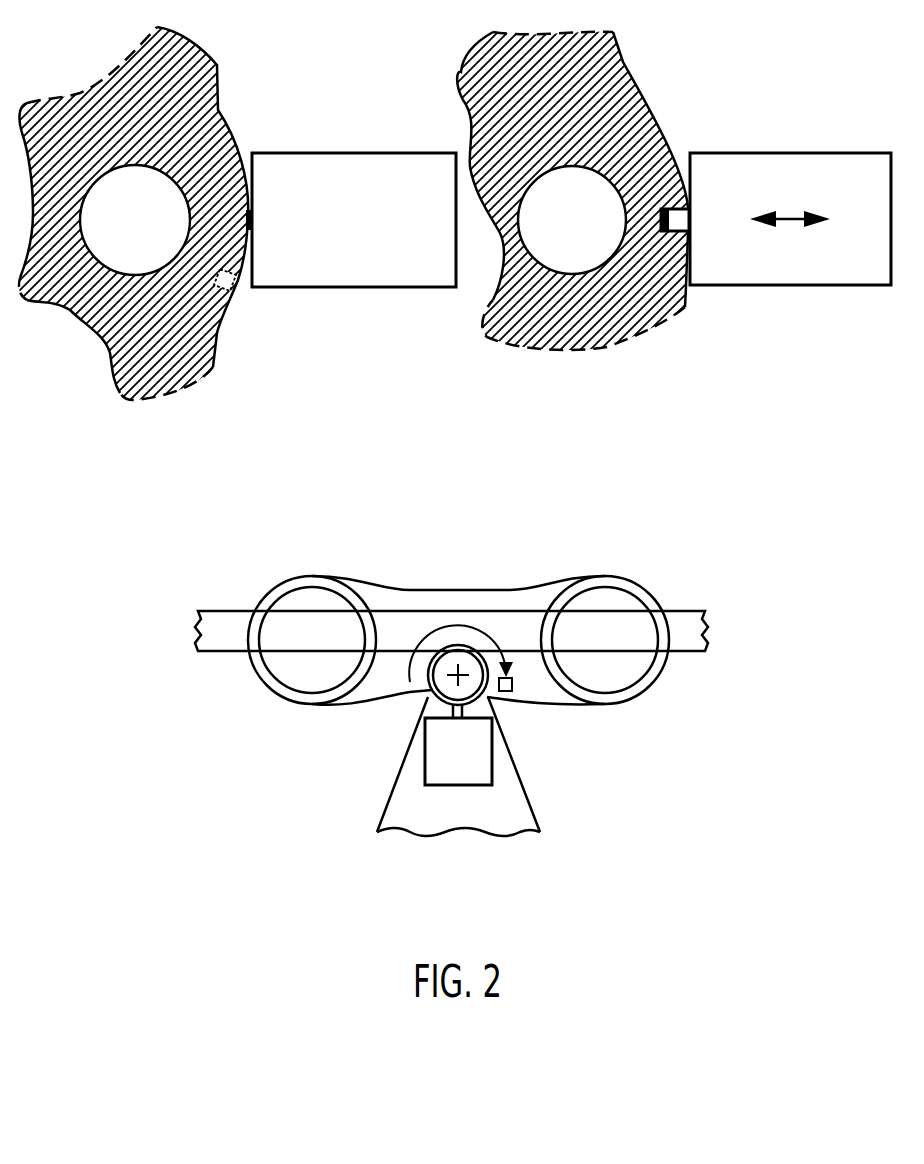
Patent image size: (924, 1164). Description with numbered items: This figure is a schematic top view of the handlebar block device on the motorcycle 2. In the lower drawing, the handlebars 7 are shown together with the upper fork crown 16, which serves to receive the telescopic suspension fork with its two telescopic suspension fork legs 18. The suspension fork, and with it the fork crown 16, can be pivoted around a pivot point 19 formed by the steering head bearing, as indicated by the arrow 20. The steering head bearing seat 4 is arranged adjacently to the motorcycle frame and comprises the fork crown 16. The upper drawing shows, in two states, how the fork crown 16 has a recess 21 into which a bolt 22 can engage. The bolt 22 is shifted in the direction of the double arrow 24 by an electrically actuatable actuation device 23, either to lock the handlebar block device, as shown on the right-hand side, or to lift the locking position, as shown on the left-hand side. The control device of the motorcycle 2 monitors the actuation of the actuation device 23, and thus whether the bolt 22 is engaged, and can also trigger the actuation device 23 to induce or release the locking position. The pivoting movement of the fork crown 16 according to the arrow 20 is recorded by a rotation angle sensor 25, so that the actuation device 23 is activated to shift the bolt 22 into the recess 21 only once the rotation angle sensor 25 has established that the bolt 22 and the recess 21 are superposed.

The motorcycle 2 is at (521, 833).
The steering head bearing seat 4 is at (458, 672).
The handlebars 7 is at (686, 644).
The upper fork crown 16 is at (485, 589).
The telescopic suspension fork legs 18 is at (279, 685).
The pivot point 19 is at (428, 692).
The arrow 20 is at (460, 628).
The recess 21 is at (235, 295).
The bolt 22 is at (667, 232).
The electrically actuatable actuation device 23 is at (870, 276).
The double arrow 24 is at (788, 224).
The rotation angle sensor 25 is at (514, 692).